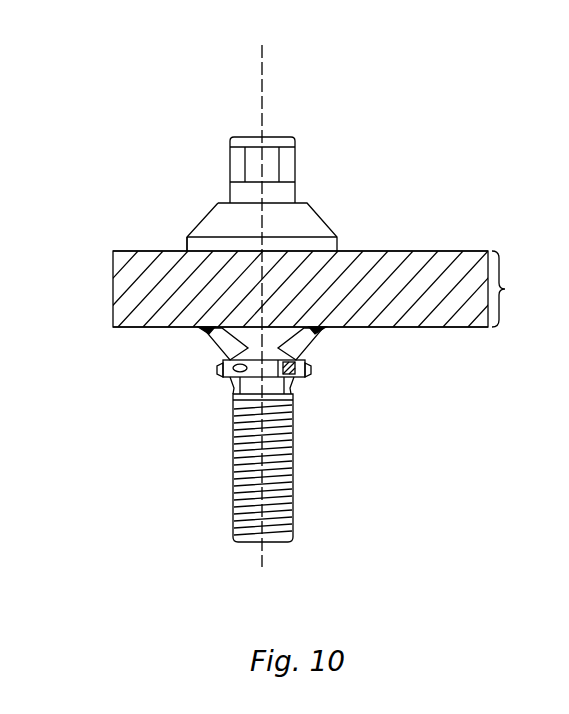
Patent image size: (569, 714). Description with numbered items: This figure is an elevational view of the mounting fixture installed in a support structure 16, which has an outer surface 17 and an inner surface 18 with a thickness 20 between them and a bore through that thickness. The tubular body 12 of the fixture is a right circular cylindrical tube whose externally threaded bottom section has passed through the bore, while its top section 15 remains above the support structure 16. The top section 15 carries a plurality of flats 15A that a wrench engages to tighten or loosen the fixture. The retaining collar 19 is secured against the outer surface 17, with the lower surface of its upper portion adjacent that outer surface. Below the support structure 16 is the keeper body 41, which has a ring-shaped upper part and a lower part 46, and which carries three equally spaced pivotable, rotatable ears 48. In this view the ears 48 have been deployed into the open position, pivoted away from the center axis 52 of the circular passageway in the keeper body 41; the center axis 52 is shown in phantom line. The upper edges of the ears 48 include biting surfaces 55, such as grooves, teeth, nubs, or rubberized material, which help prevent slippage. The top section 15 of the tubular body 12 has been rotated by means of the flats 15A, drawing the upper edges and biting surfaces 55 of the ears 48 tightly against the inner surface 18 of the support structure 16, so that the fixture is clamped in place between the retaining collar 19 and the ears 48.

The center axis 52 is at (263, 102).
The plurality of flats 15A is at (287, 165).
The tubular body 12 is at (230, 195).
The top section 15 is at (297, 201).
The outer surface 17 is at (401, 251).
The support structure 16 is at (466, 246).
The retaining collar 19 is at (176, 230).
The thickness 20 is at (524, 289).
The inner surface 18 is at (473, 327).
The biting surfaces 55 is at (203, 333).
The ears 48 is at (217, 348).
The keeper body 41 is at (222, 404).
The lower part 46 is at (298, 392).